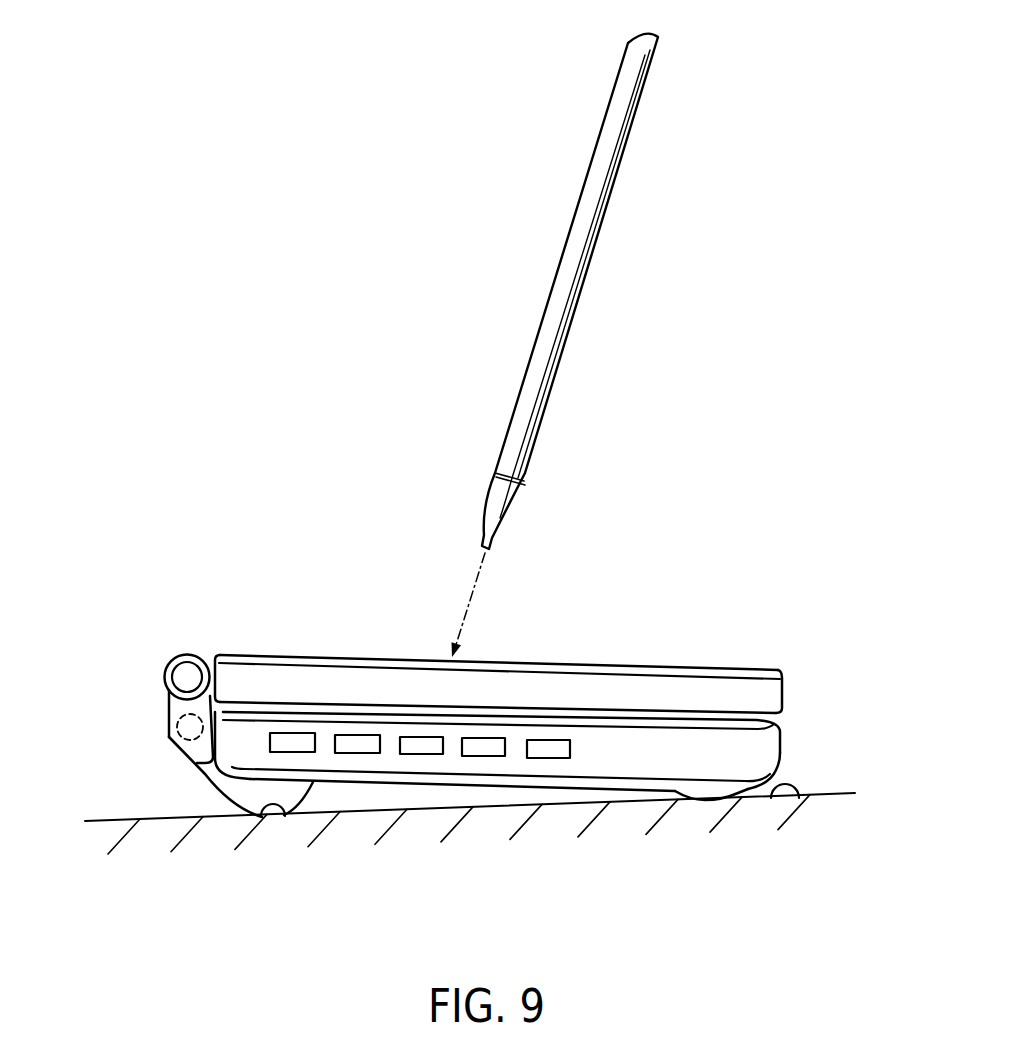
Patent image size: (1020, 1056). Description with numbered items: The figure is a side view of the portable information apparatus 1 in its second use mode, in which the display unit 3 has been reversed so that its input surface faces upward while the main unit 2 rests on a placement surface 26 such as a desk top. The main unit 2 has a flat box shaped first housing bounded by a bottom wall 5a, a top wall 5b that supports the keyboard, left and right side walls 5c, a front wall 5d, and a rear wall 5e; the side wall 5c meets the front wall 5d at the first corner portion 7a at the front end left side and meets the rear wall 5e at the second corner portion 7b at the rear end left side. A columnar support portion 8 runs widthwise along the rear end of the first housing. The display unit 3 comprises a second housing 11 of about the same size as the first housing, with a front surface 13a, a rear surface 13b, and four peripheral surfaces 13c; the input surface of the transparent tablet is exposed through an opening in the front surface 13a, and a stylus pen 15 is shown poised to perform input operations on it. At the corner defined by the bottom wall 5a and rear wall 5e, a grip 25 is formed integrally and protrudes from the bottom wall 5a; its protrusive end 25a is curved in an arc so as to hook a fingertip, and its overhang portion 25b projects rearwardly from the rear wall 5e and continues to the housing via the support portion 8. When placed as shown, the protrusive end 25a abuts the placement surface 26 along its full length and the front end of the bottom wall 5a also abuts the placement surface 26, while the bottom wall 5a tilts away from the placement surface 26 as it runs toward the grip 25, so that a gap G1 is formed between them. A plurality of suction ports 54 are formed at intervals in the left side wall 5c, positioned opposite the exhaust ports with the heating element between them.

The portable information apparatus 1 is at (745, 560).
The main unit 2 is at (494, 762).
The display unit 3 is at (501, 651).
The bottom wall 5a is at (520, 787).
The top wall 5b is at (610, 710).
The side wall 5c is at (622, 757).
The front wall 5d is at (777, 773).
The rear wall 5e is at (215, 760).
The first corner portion 7a is at (752, 763).
The second corner portion 7b is at (224, 723).
The support portion 8 is at (168, 667).
The second housing 11 is at (678, 688).
The front surface 13a is at (322, 656).
The rear surface 13b is at (540, 718).
The peripheral surface 13c is at (400, 685).
The stylus pen 15 is at (580, 260).
The grip 25 is at (235, 792).
The protrusive end 25a is at (283, 817).
The overhang portion 25b is at (177, 728).
The placement surface 26 is at (800, 800).
The suction port 54 is at (420, 754).
The gap G1 is at (453, 797).